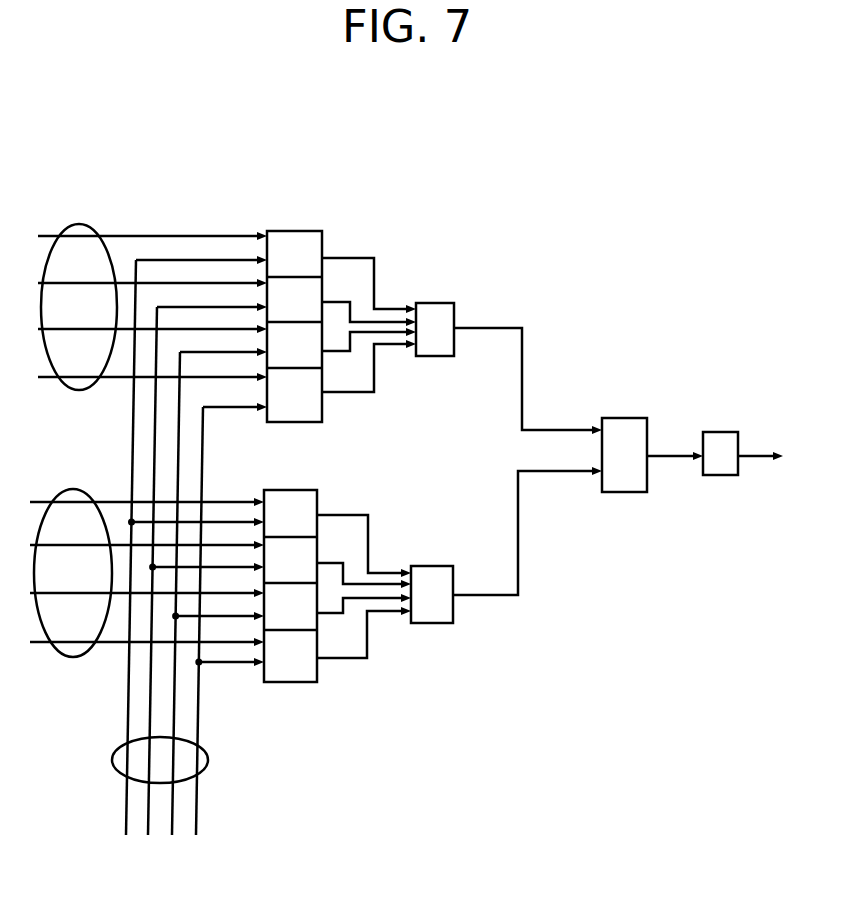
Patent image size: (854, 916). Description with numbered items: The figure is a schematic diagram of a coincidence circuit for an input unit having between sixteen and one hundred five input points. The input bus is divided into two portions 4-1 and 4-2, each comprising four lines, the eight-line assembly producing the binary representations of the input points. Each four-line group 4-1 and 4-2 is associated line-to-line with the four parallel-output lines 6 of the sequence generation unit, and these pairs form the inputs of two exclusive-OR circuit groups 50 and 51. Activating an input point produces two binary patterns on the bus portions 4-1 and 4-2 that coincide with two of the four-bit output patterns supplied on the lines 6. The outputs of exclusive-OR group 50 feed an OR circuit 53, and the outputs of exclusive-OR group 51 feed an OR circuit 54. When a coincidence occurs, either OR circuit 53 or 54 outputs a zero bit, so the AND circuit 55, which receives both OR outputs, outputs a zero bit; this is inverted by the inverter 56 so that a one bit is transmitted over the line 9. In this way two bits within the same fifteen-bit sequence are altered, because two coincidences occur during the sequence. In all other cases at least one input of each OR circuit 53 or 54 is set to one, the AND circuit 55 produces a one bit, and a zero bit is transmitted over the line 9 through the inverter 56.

The input bus portion 4-1 is at (83, 225).
The input bus portion 4-2 is at (70, 489).
The parallel-output lines 6 is at (208, 760).
The X OR circuits group 50 is at (305, 230).
The X OR circuits group 51 is at (298, 490).
The OR circuit 53 is at (457, 318).
The OR circuit 54 is at (430, 566).
The AND circuit 55 is at (622, 418).
The inverter 56 is at (723, 432).
The line 9 is at (750, 456).